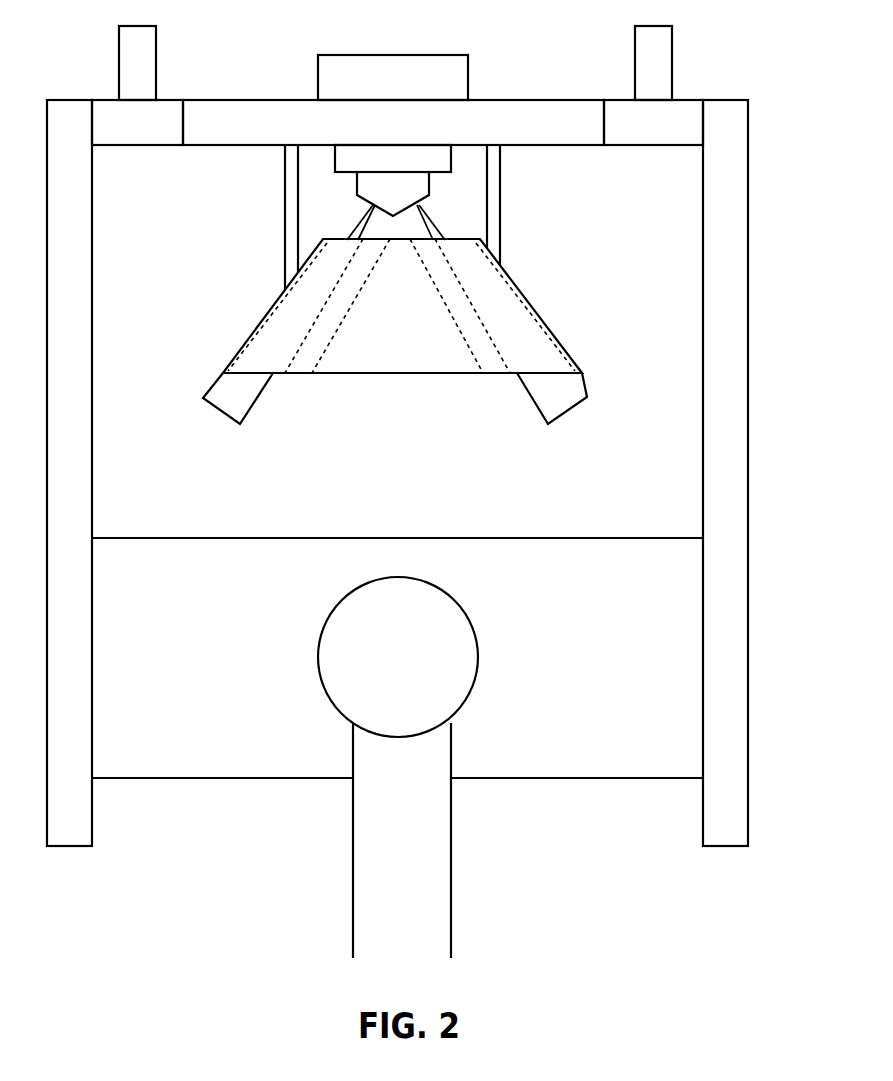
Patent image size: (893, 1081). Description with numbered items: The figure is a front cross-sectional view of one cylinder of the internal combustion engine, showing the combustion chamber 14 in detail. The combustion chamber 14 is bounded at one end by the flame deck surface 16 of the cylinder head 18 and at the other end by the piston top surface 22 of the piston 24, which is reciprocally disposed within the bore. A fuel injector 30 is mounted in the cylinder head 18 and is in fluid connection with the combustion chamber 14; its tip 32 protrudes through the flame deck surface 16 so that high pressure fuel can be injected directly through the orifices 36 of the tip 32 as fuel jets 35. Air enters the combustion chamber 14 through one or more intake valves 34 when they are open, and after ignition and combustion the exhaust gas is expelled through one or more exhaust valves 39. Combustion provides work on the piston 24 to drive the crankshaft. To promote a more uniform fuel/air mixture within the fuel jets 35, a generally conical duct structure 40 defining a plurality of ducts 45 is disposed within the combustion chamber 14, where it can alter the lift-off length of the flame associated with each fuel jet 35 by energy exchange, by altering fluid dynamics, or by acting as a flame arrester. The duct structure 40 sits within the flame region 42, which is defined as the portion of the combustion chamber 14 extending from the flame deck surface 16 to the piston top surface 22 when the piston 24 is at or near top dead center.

The combustion chamber 14 is at (637, 477).
The flame deck surface 16 is at (543, 148).
The cylinder head 18 is at (512, 118).
The piston top surface 22 is at (443, 537).
The piston 24 is at (628, 692).
The fuel injector 30 is at (468, 75).
The tip 32 is at (378, 192).
The intake valve 34 is at (107, 101).
The fuel jet 35 is at (235, 393).
The orifice 36 is at (373, 204).
The exhaust valve 39 is at (687, 101).
The duct structure 40 is at (260, 319).
The flame region 42 is at (650, 303).
The duct 45 is at (287, 308).